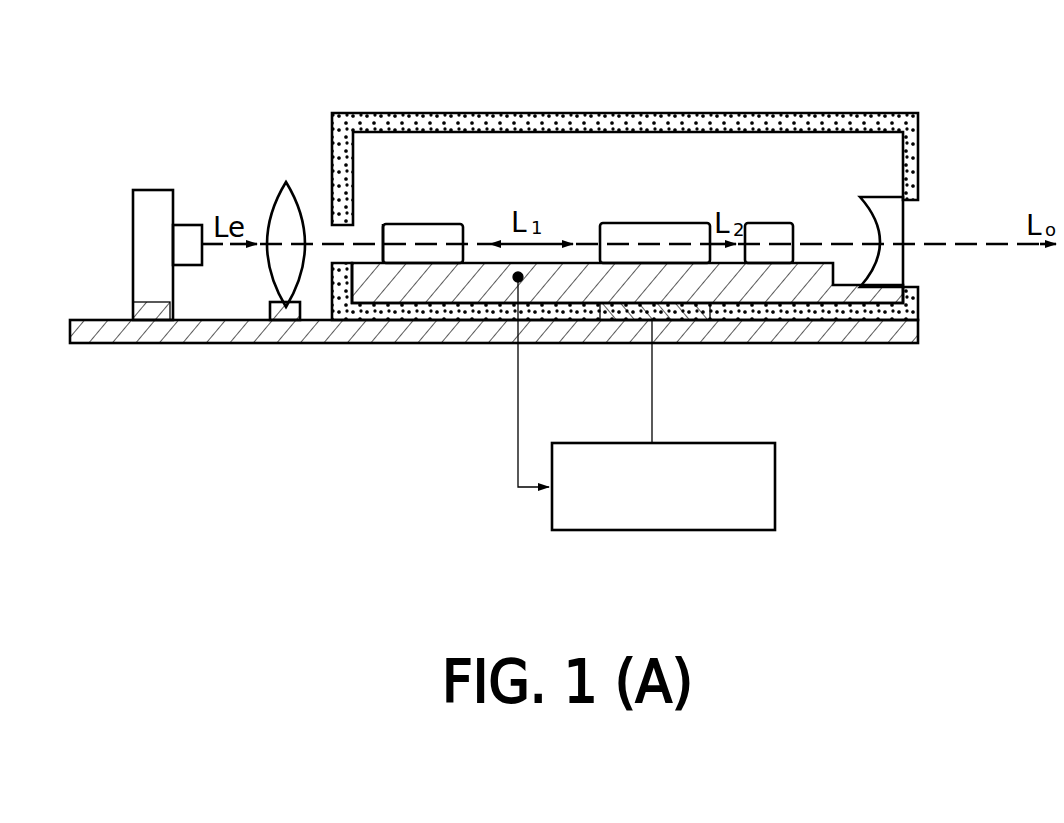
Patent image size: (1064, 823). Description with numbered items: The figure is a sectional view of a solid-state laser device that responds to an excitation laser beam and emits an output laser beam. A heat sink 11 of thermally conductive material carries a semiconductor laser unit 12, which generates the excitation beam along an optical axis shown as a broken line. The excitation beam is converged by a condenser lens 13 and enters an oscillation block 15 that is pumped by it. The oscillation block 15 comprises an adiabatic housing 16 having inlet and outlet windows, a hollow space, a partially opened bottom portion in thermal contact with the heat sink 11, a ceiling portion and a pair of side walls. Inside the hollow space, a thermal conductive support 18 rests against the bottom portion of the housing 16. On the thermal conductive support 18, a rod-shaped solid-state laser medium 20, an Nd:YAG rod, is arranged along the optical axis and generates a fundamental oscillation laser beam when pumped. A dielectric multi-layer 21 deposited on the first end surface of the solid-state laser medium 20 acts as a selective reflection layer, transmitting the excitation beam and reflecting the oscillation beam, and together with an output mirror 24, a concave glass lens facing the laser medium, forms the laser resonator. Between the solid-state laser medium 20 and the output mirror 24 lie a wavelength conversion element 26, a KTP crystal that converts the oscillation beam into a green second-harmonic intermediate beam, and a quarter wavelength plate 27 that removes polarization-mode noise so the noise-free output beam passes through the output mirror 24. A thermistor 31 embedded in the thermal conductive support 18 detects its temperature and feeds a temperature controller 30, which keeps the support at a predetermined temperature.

The heat sink 11 is at (828, 332).
The semiconductor laser unit 12 is at (133, 228).
The condenser lens 13 is at (287, 182).
The oscillation block 15 is at (625, 177).
The adiabatic housing 16 is at (640, 121).
The thermal conductive support 18 is at (393, 292).
The solid-state laser medium 20 is at (447, 224).
The dielectric multi-layer 21 is at (384, 232).
The output mirror 24 is at (905, 268).
The wavelength conversion element 26 is at (645, 223).
The quarter wavelength plate 27 is at (765, 223).
The temperature controller 30 is at (777, 470).
The thermistor 31 is at (511, 290).